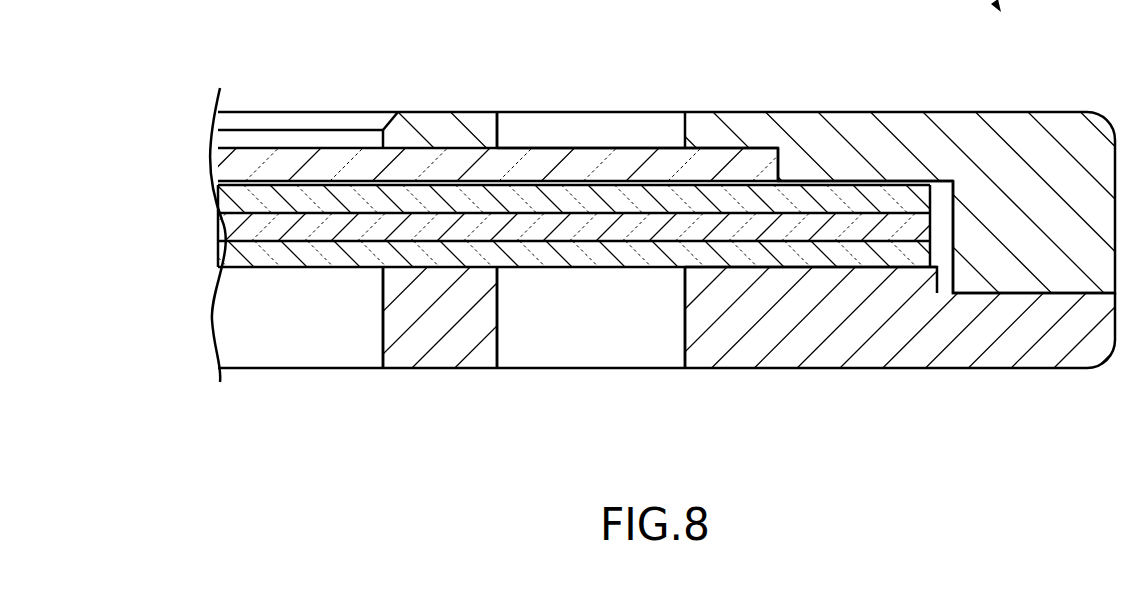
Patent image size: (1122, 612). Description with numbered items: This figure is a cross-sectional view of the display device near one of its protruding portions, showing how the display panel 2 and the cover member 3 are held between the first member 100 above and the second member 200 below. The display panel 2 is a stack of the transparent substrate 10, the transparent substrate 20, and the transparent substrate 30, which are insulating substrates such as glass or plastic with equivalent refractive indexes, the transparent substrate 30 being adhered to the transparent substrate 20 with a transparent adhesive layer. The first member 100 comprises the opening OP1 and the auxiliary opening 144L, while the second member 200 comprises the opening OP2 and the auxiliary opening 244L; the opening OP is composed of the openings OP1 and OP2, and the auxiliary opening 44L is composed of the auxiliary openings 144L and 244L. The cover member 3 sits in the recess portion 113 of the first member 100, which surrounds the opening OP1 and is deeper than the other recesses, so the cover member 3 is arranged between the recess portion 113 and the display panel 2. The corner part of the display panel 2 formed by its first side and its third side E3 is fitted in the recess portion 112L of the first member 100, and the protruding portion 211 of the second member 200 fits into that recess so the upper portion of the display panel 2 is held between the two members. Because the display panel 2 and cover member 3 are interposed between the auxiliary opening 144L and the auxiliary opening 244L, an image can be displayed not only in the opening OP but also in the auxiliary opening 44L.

The first member 100 is at (1045, 111).
The second member 200 is at (1029, 369).
The opening OP1 is at (268, 125).
The opening OP is at (340, 126).
The auxiliary opening 144L is at (582, 125).
The auxiliary opening 44L is at (653, 126).
The recess portion 113 is at (722, 153).
The recess portion 112L is at (845, 188).
The third side E3 is at (941, 223).
The cover member 3 is at (225, 170).
The transparent substrate 30 is at (227, 203).
The transparent substrate 20 is at (228, 232).
The transparent substrate 10 is at (228, 258).
The display panel 2 is at (248, 280).
The opening OP2 is at (299, 352).
The auxiliary opening 244L is at (594, 352).
The protruding portion 211 is at (835, 262).